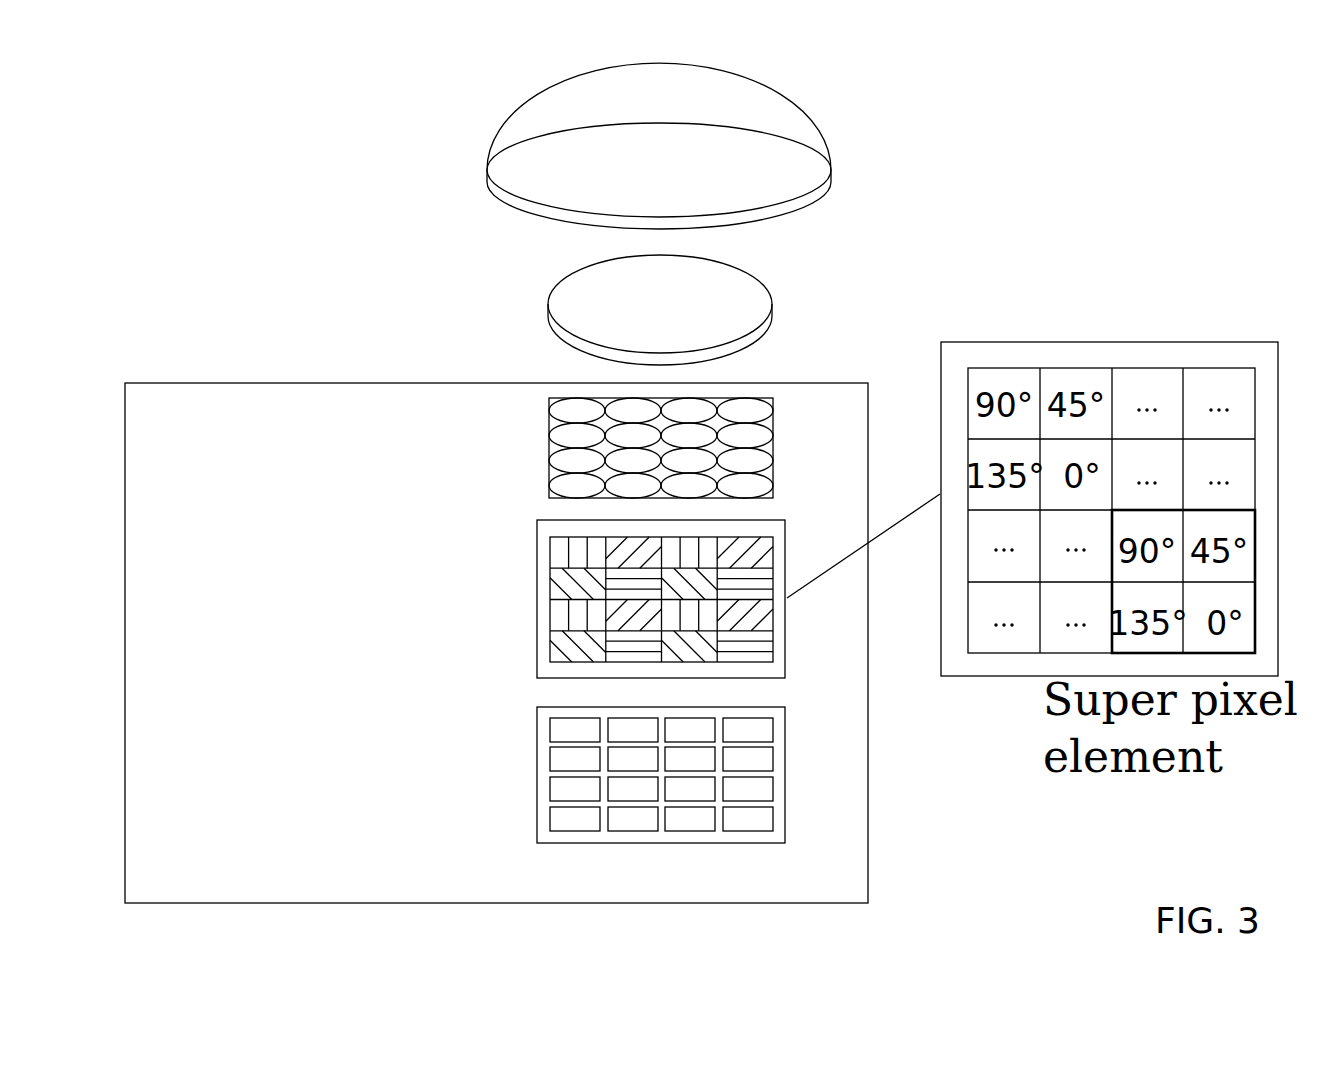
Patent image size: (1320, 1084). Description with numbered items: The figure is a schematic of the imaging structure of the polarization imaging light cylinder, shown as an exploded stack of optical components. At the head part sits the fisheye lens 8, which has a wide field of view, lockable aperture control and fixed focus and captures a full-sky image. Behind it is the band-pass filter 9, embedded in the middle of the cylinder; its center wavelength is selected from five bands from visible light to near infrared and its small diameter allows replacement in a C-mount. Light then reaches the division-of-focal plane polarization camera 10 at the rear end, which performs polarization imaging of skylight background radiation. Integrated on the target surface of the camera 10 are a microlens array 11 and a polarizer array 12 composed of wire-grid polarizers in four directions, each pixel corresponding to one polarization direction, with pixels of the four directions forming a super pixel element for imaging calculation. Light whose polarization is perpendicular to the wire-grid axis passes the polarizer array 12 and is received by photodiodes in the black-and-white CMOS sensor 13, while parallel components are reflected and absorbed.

The fisheye lens 8 is at (478, 158).
The band-pass filter 9 is at (540, 310).
The division-of-focal plane polarization camera 10 is at (876, 868).
The microlens array 11 is at (543, 458).
The polarizer array 12 is at (527, 612).
The CMOS sensor 13 is at (528, 767).